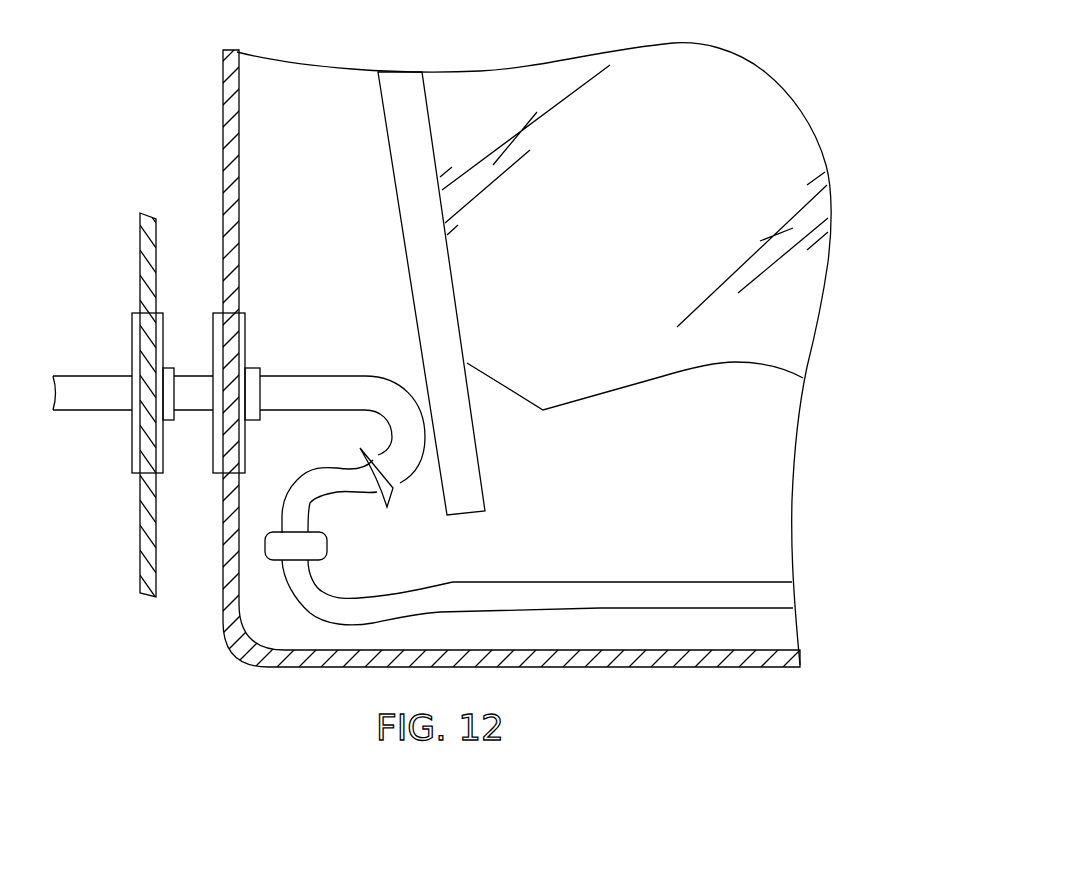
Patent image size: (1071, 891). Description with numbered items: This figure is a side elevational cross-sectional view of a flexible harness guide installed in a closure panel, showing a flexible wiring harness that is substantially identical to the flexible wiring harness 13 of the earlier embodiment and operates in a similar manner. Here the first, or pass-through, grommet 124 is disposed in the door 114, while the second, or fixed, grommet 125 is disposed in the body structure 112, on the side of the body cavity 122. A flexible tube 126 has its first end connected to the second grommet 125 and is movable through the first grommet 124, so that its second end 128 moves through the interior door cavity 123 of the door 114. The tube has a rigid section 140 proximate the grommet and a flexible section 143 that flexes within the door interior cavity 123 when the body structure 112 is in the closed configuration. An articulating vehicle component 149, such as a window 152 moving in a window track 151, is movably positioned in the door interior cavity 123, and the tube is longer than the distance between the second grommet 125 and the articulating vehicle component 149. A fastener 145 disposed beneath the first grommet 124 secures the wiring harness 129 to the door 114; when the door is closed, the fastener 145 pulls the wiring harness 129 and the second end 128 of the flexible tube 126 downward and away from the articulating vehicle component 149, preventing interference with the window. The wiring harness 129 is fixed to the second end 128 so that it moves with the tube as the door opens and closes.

The flexible wiring harness 13 is at (337, 340).
The body structure 112 is at (138, 238).
The door 114 is at (221, 95).
The outer compartment 122 is at (63, 291).
The interior door cavity 123 is at (303, 165).
The first grommet 124 is at (212, 321).
The second grommet 125 is at (130, 447).
The flexible tube 126 is at (193, 420).
The second end 128 is at (377, 448).
The wiring harness 129 is at (703, 582).
The rigid section 140 is at (192, 376).
The flexible section 143 is at (402, 391).
The fastener 145 is at (327, 546).
The articulating vehicle component 149 is at (633, 390).
The window 151 is at (733, 102).
The window 152 is at (418, 118).